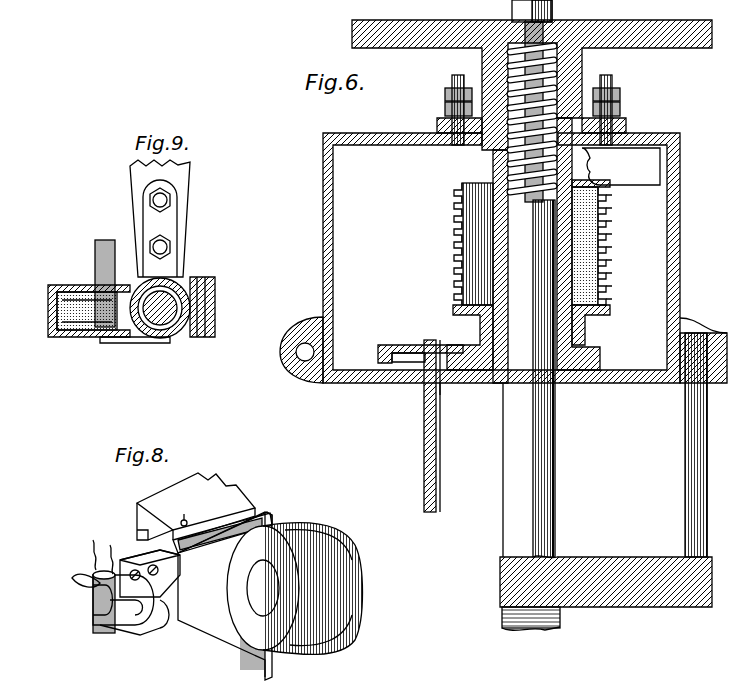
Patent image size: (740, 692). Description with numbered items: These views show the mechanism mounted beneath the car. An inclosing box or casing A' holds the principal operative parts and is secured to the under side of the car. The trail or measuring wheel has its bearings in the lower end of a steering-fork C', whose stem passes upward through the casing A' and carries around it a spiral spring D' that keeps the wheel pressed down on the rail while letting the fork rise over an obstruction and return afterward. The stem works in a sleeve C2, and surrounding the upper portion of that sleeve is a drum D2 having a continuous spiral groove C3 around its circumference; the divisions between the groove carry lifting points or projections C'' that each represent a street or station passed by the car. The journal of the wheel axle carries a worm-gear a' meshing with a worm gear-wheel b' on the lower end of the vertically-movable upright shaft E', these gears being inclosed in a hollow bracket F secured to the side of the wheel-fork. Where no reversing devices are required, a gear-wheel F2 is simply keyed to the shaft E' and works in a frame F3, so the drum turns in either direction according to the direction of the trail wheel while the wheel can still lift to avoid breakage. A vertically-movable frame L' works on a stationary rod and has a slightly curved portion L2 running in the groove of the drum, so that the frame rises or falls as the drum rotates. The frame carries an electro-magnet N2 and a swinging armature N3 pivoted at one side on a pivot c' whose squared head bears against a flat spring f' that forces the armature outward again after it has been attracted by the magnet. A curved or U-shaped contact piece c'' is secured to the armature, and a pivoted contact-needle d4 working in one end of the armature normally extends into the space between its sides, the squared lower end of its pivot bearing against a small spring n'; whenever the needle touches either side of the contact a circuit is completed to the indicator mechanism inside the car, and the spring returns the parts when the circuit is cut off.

In FIG. 6, the inclosing box or casing A' is at (480, 250).
In FIG. 9, the steering-fork C' is at (170, 218).
In FIG. 6, the lifting points or projections C'' is at (593, 593).
In FIG. 6, the sleeve C2 is at (529, 378).
In FIG. 6, the continuous spiral groove C3 is at (455, 258).
In FIG. 6, the spiral spring D' is at (649, 352).
In FIG. 6, the drum D2 is at (610, 262).
In FIG. 6, the vertically-movable upright shaft E' is at (419, 426).
In FIG. 9, the vertically-movable upright shaft E' is at (92, 283).
In FIG. 9, the hollow bracket F is at (50, 312).
In FIG. 6, the gear-wheel F2 is at (451, 393).
In FIG. 6, the frame F3 is at (420, 345).
In FIG. 9, the worm-gear a' is at (160, 322).
In FIG. 9, the worm gear-wheel b' is at (87, 327).
In FIG. 8, the slightly-curved portion L2 is at (196, 505).
In FIG. 8, the vertically-movable frame L' is at (222, 525).
In FIG. 8, the pivot c' is at (189, 511).
In FIG. 8, the flat spring f' is at (228, 525).
In FIG. 8, the swinging armature N3 is at (225, 596).
In FIG. 8, the electro-magnet N2 is at (322, 630).
In FIG. 8, the small spring n' is at (157, 595).
In FIG. 8, the curved or U-shaped contact piece c'' is at (131, 614).
In FIG. 8, the contact-needle d4 is at (85, 584).